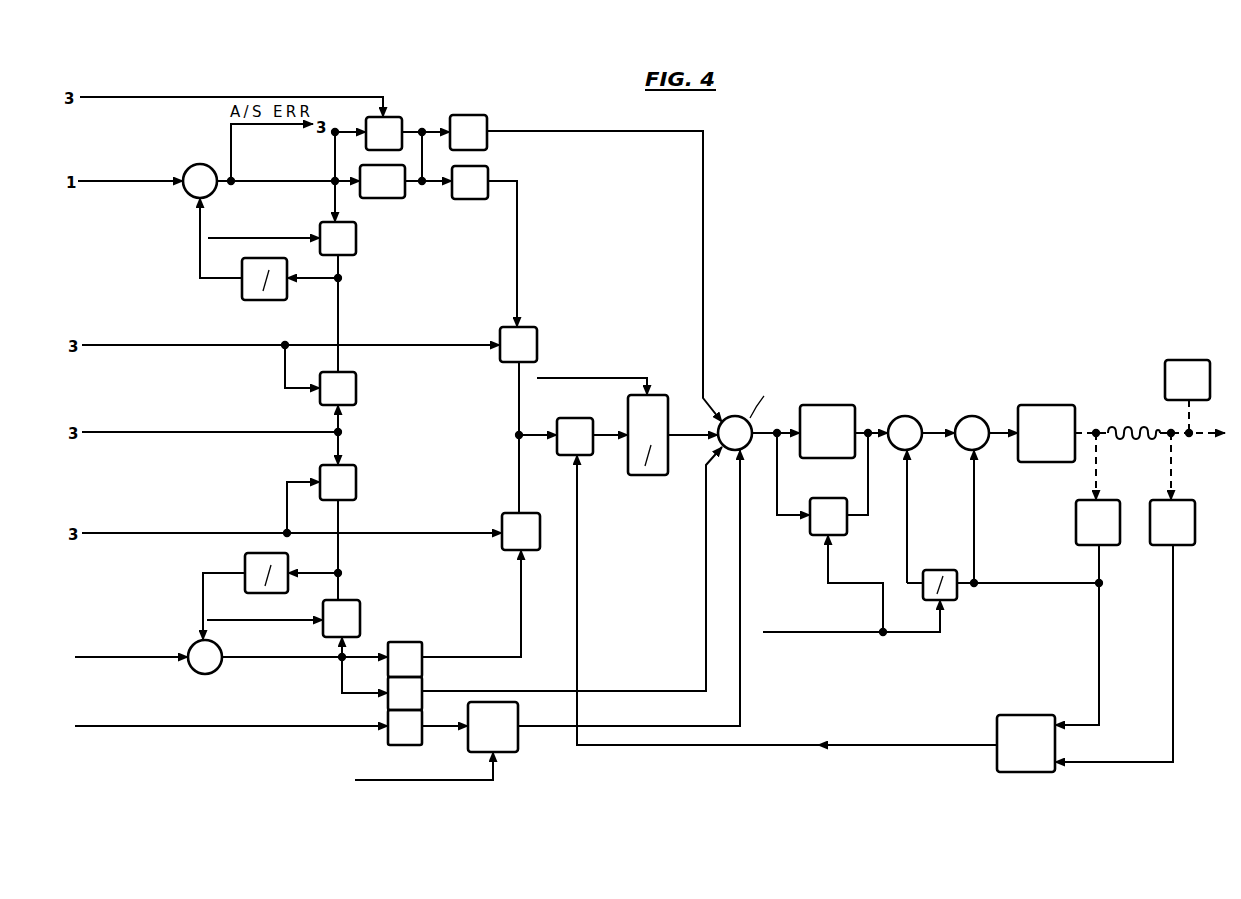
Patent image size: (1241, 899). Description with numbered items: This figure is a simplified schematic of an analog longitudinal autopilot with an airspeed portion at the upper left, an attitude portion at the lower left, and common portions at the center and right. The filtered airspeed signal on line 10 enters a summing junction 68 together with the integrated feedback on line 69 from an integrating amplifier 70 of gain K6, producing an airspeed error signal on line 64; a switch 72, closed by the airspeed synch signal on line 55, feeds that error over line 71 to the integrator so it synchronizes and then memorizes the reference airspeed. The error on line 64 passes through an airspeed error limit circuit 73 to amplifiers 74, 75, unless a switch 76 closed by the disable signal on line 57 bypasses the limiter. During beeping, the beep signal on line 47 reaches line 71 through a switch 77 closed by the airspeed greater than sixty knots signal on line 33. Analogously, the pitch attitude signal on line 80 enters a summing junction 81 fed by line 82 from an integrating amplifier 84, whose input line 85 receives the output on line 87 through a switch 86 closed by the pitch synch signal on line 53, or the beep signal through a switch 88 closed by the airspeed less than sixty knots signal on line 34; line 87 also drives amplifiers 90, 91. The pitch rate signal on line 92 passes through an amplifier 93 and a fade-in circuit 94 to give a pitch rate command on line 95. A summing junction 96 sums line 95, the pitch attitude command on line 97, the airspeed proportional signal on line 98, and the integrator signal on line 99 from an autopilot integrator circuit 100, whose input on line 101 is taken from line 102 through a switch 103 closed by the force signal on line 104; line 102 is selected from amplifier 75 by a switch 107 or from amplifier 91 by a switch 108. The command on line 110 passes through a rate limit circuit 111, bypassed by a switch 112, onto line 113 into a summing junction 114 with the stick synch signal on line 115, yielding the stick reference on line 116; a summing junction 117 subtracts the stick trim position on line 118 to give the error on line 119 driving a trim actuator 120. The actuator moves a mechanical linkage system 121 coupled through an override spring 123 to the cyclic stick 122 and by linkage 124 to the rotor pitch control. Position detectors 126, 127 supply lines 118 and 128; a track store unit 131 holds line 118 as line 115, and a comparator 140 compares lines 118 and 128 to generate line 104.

The airspeed error limit disable signal line 57 is at (311, 97).
The filtered airspeed signal line 10 is at (92, 183).
The summing junction 68 is at (208, 166).
The integrated feedback signal line 69 is at (200, 219).
The airspeed error signal line 64 is at (268, 181).
The airspeed synch signal line 55 is at (220, 240).
The integrating amplifier 70 is at (266, 258).
The switch 72 is at (356, 240).
The integrator input line 71 is at (340, 290).
The airspeed error limit circuit 73 is at (388, 198).
The switch 76 is at (398, 118).
The amplifier 74 is at (466, 115).
The amplifier 75 is at (468, 199).
The airspeed proportional signal line 98 is at (703, 260).
The airspeed greater than 60 knots signal line 33 is at (94, 348).
The switch 77 is at (356, 390).
The beep signal line 47 is at (94, 435).
The switch 88 is at (356, 484).
The airspeed less than 60 knots signal line 34 is at (94, 536).
The integrator input line 85 is at (322, 572).
The integrating amplifier 84 is at (245, 557).
The signal line 82 is at (203, 606).
The pitch synch signal line 53 is at (240, 622).
The switch 86 is at (356, 602).
The pitch attitude signal line 80 is at (86, 660).
The summing junction 81 is at (193, 676).
The pitch attitude synch signal line 87 is at (266, 660).
The pitch rate signal line 92 is at (88, 729).
The amplifier 91 is at (420, 643).
The amplifier 90 is at (418, 684).
The amplifier 93 is at (418, 743).
The pitch attitude command signal line 97 is at (706, 661).
The fade-in circuit 94 is at (518, 714).
The pitch rate command signal line 95 is at (740, 704).
The switch 107 is at (503, 363).
The selected signal line 102 is at (519, 423).
The switch 108 is at (511, 513).
The switch 103 is at (578, 418).
The integrator input signal line 101 is at (600, 438).
The autopilot integrator circuit 100 is at (660, 395).
The pitch autopilot integrator signal line 99 is at (678, 432).
The force less than two pound signal line 104 is at (577, 520).
The summing junction 96 is at (748, 446).
The pitch autopilot command signal line 110 is at (777, 506).
The rate limit circuit 111 is at (826, 405).
The pitch autopilot command line 113 is at (868, 498).
The switch 112 is at (824, 498).
The summing junction 114 is at (912, 418).
The stick synch signal line 115 is at (909, 518).
The stick reference signal line 116 is at (927, 446).
The summing junction 117 is at (978, 418).
The stick trim position signal line 118 is at (976, 518).
The track store unit 131 is at (950, 570).
The stick command error signal line 119 is at (991, 446).
The trim actuator 120 is at (1043, 405).
The mechanical linkage system 121 is at (1130, 417).
The override spring 123 is at (1150, 418).
The pilot's longitudinal cyclic stick 122 is at (1197, 355).
The linkage 124 is at (1192, 438).
The position detector 126 is at (1076, 522).
The position detector 127 is at (1180, 500).
The stick position signal line 128 is at (1173, 658).
The comparator 140 is at (1023, 715).